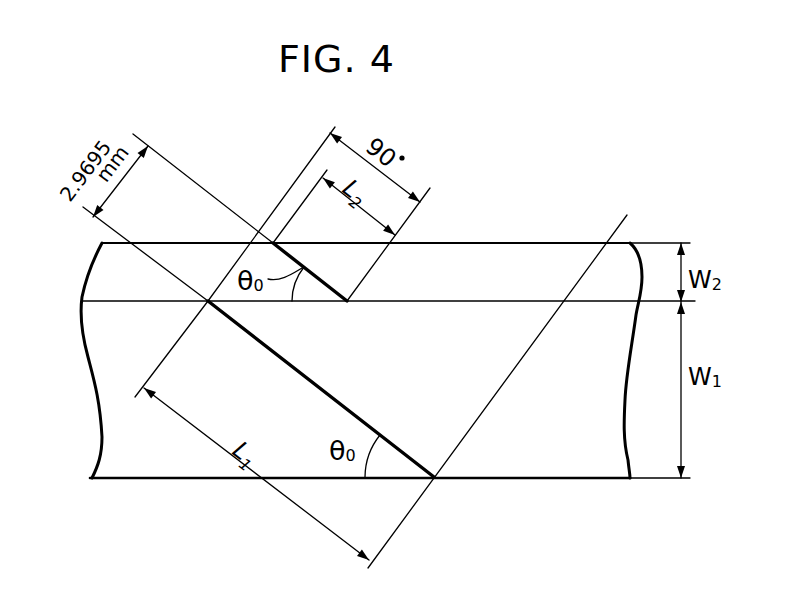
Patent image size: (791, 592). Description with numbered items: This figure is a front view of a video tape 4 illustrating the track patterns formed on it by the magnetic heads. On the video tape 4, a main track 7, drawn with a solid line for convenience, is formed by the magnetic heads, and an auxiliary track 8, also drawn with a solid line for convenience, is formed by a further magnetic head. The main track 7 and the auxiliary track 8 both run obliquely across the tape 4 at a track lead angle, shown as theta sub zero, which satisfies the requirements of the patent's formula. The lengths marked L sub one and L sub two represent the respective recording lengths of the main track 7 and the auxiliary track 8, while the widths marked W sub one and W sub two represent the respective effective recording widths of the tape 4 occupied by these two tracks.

The video tape 4 is at (107, 355).
The main track 7 is at (358, 415).
The auxiliary track 8 is at (318, 279).